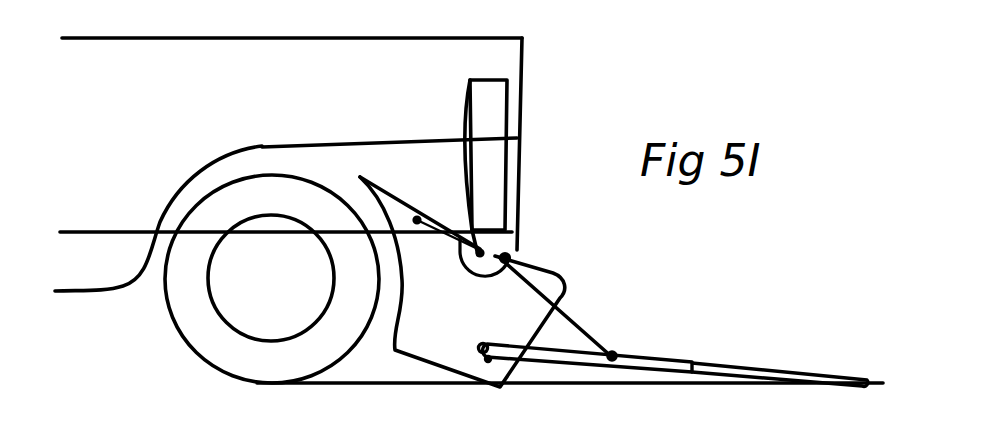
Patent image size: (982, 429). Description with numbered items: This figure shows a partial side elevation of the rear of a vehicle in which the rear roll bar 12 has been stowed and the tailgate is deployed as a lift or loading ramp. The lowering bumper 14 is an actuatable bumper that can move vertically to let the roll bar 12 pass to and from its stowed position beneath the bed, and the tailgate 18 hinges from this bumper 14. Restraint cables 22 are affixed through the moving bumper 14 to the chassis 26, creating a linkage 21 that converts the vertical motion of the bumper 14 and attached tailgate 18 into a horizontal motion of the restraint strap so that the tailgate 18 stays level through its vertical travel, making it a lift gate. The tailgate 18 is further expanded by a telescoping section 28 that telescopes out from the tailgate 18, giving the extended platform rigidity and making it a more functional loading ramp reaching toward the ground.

The chassis 26 is at (392, 118).
The roll bar 12 is at (497, 120).
The lowering bumper 14 is at (468, 317).
The linkage 21 is at (513, 261).
The restraint cables 22 is at (570, 318).
The tailgate 18 is at (653, 362).
The telescoping section 28 is at (750, 373).